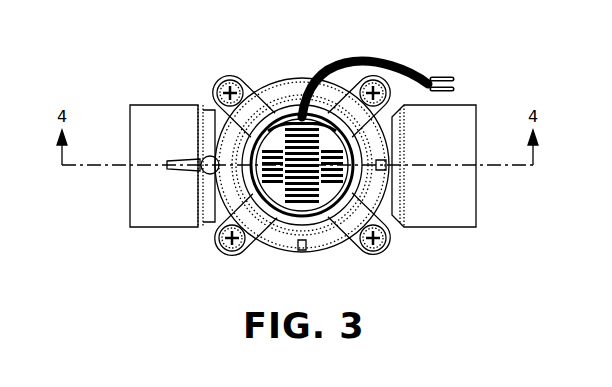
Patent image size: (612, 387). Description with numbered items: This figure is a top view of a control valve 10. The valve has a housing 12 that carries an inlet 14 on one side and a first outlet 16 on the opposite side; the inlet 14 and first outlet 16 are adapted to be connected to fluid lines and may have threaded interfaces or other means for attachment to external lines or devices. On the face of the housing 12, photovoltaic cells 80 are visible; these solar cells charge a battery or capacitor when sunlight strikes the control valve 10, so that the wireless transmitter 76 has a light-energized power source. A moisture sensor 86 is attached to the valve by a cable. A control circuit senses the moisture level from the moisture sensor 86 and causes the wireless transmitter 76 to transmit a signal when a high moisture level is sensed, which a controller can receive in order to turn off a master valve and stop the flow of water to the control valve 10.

The control valve 10 is at (473, 83).
The housing 12 is at (275, 245).
The inlet 14 is at (152, 228).
The first outlet 16 is at (453, 227).
The wireless transmitter 76 is at (270, 115).
The photovoltaic cells 80 is at (303, 207).
The moisture sensor 86 is at (352, 60).